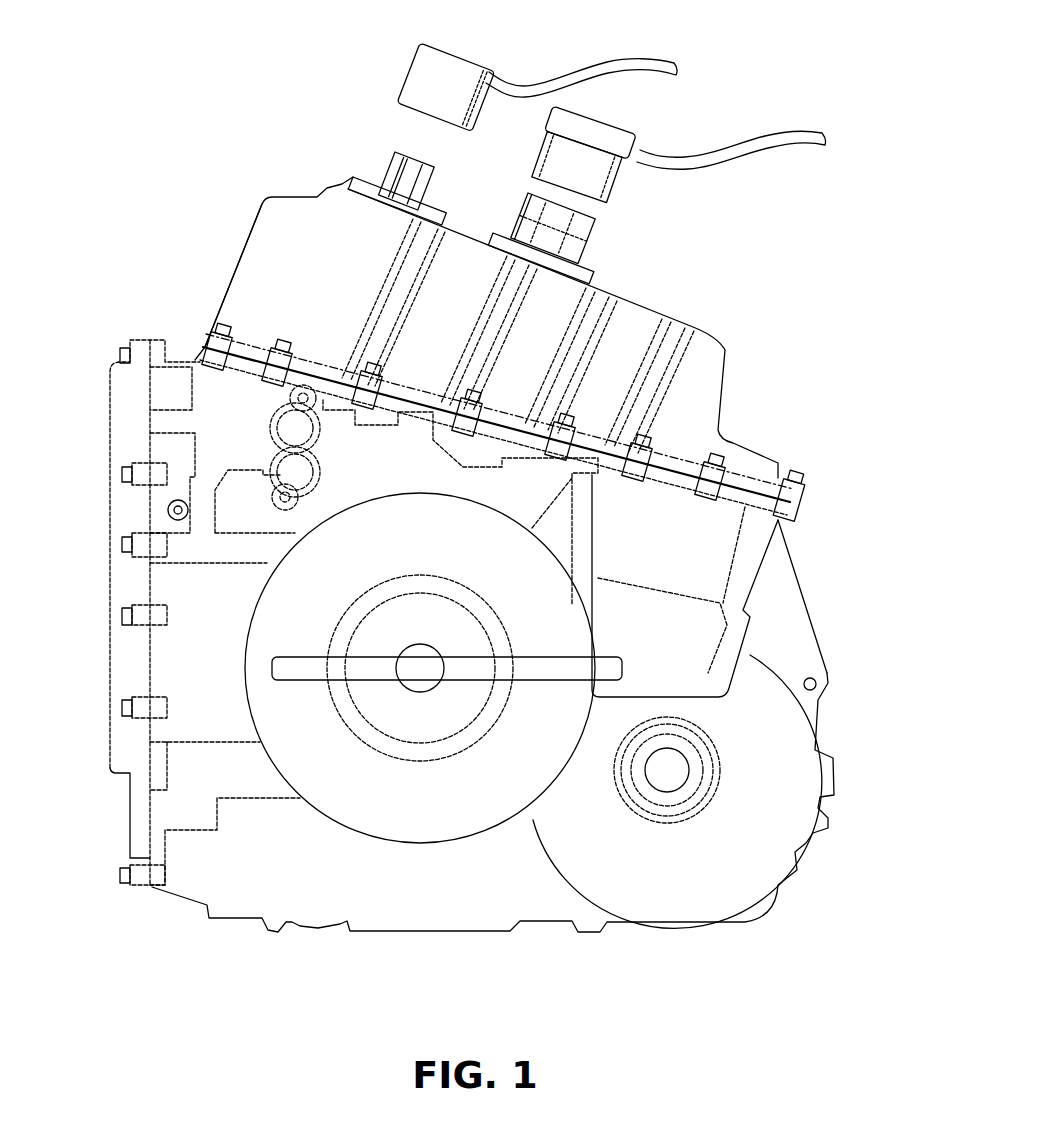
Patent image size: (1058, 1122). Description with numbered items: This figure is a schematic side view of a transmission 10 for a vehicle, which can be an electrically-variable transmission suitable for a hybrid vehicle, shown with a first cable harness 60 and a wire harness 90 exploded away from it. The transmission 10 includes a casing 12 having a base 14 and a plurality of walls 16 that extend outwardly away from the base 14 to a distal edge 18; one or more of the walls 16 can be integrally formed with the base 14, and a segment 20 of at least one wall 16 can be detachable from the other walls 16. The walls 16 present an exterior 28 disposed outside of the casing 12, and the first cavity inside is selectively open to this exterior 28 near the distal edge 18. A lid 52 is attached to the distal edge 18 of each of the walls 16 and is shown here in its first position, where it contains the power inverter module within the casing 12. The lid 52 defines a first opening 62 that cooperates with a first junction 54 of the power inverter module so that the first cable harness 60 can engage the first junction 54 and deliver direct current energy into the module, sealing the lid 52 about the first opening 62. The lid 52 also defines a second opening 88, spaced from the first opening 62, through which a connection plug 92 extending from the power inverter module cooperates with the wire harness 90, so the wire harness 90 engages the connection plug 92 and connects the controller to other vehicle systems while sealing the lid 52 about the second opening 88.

The transmission 10 is at (262, 108).
The casing 12 is at (375, 902).
The base 14 is at (705, 925).
The walls 16 is at (195, 338).
The distal edge 18 is at (800, 508).
The segment 20 is at (118, 420).
The exterior 28 is at (795, 625).
The lid 52 is at (710, 368).
The first junction 54 is at (385, 186).
The first cable harness 60 is at (458, 80).
The first opening 62 is at (370, 178).
The second opening 88 is at (600, 272).
The wire harness 90 is at (605, 132).
The connection plug 92 is at (592, 230).